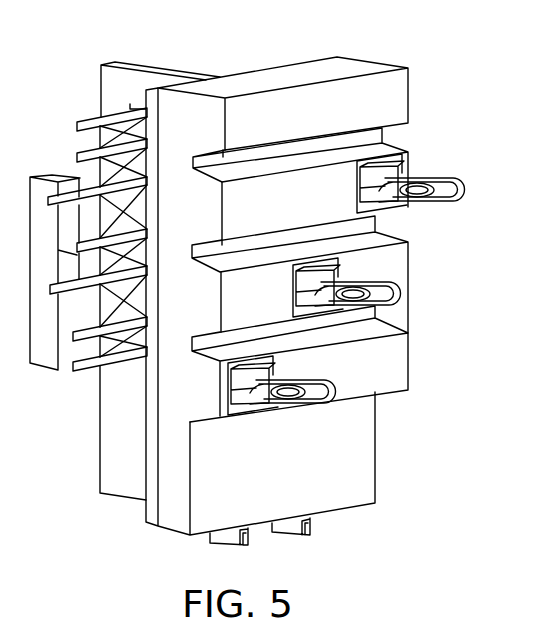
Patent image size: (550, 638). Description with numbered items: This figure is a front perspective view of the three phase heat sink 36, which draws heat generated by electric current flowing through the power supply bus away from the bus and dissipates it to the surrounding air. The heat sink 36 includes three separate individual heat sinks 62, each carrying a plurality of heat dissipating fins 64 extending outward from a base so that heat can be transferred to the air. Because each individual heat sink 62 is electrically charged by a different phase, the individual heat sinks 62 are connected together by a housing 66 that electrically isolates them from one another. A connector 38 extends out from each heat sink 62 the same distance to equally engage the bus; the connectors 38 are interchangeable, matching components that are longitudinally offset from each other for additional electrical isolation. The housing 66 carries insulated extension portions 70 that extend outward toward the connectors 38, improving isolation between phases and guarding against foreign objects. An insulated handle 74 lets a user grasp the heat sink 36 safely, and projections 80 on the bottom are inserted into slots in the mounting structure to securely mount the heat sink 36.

The three phase heat sink 36 is at (284, 42).
The connector 38 is at (447, 180).
The heat sink 62 is at (64, 133).
The fins 64 is at (78, 121).
The housing 66 is at (176, 72).
The insulated extension portion 70 is at (396, 84).
The insulated handle 74 is at (38, 176).
The projection 80 is at (251, 538).